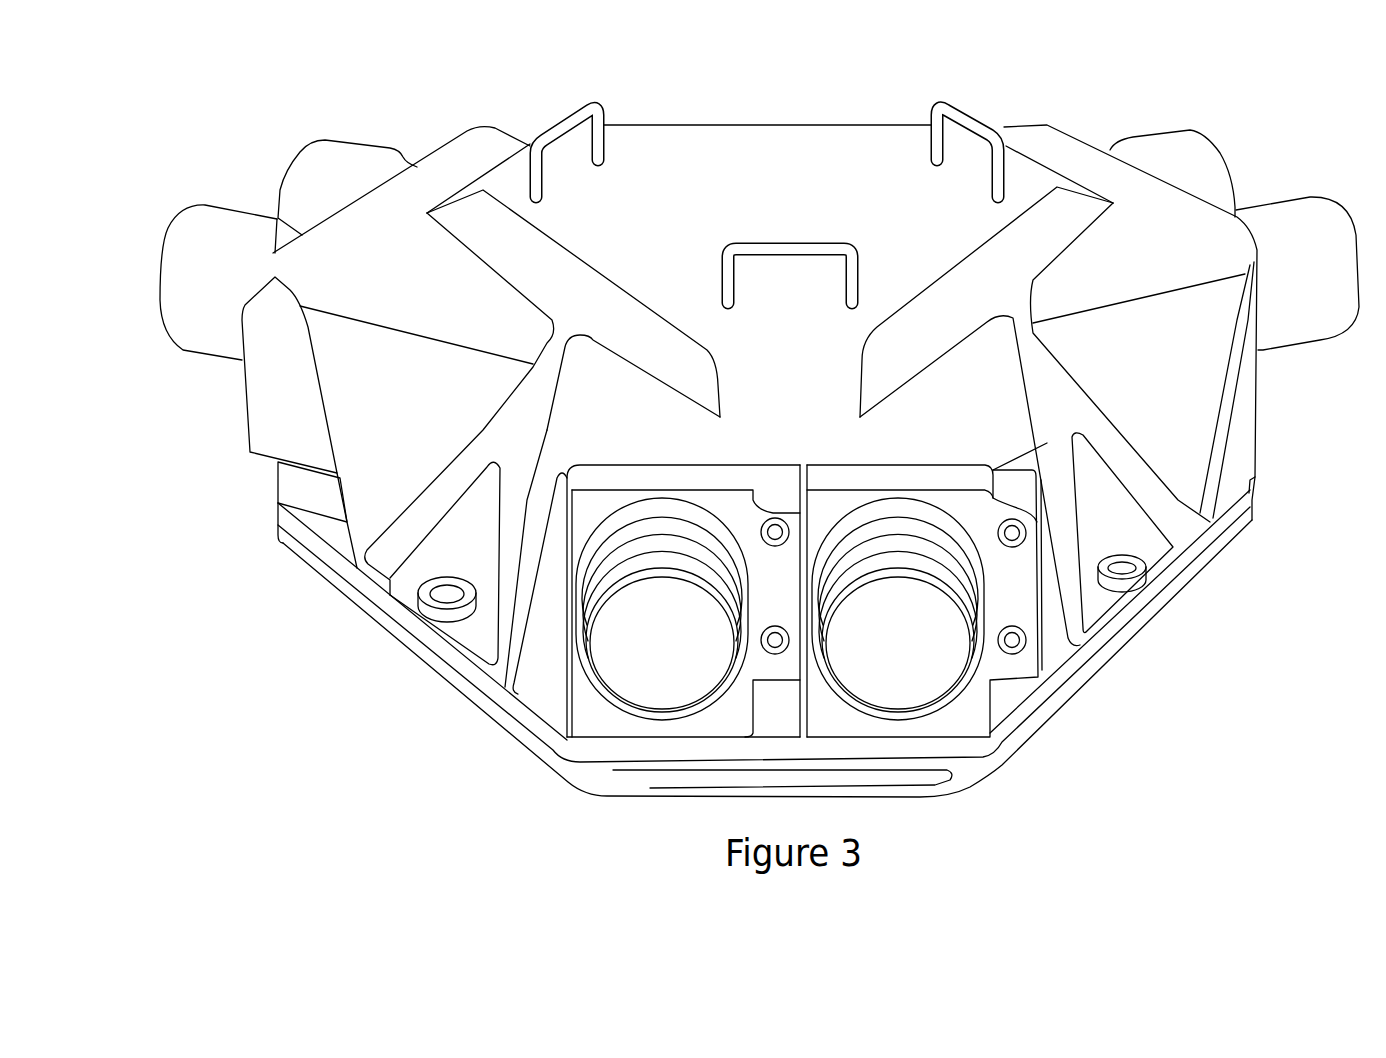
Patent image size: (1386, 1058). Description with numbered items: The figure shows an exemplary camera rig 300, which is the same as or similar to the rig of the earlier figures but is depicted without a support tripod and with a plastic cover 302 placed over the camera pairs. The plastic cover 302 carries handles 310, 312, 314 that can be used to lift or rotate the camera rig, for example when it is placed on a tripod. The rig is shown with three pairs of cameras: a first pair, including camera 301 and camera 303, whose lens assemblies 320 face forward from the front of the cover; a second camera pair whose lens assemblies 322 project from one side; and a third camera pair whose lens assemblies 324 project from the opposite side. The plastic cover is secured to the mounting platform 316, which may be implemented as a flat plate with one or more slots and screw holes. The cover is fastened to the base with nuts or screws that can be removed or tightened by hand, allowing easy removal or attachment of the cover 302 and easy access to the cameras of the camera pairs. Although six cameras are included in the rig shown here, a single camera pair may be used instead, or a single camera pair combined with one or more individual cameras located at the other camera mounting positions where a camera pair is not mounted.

The camera rig 300 is at (224, 74).
The first pair camera 301 is at (1005, 583).
The plastic cover 302 is at (755, 145).
The left housing block 303 is at (585, 707).
The handle 310 is at (575, 113).
The handle 312 is at (962, 120).
The handle 314 is at (812, 250).
The mounting platform 316 is at (383, 607).
The lens assembly 320 is at (950, 695).
The lens assembly 322 is at (193, 333).
The lens assembly 324 is at (1150, 152).